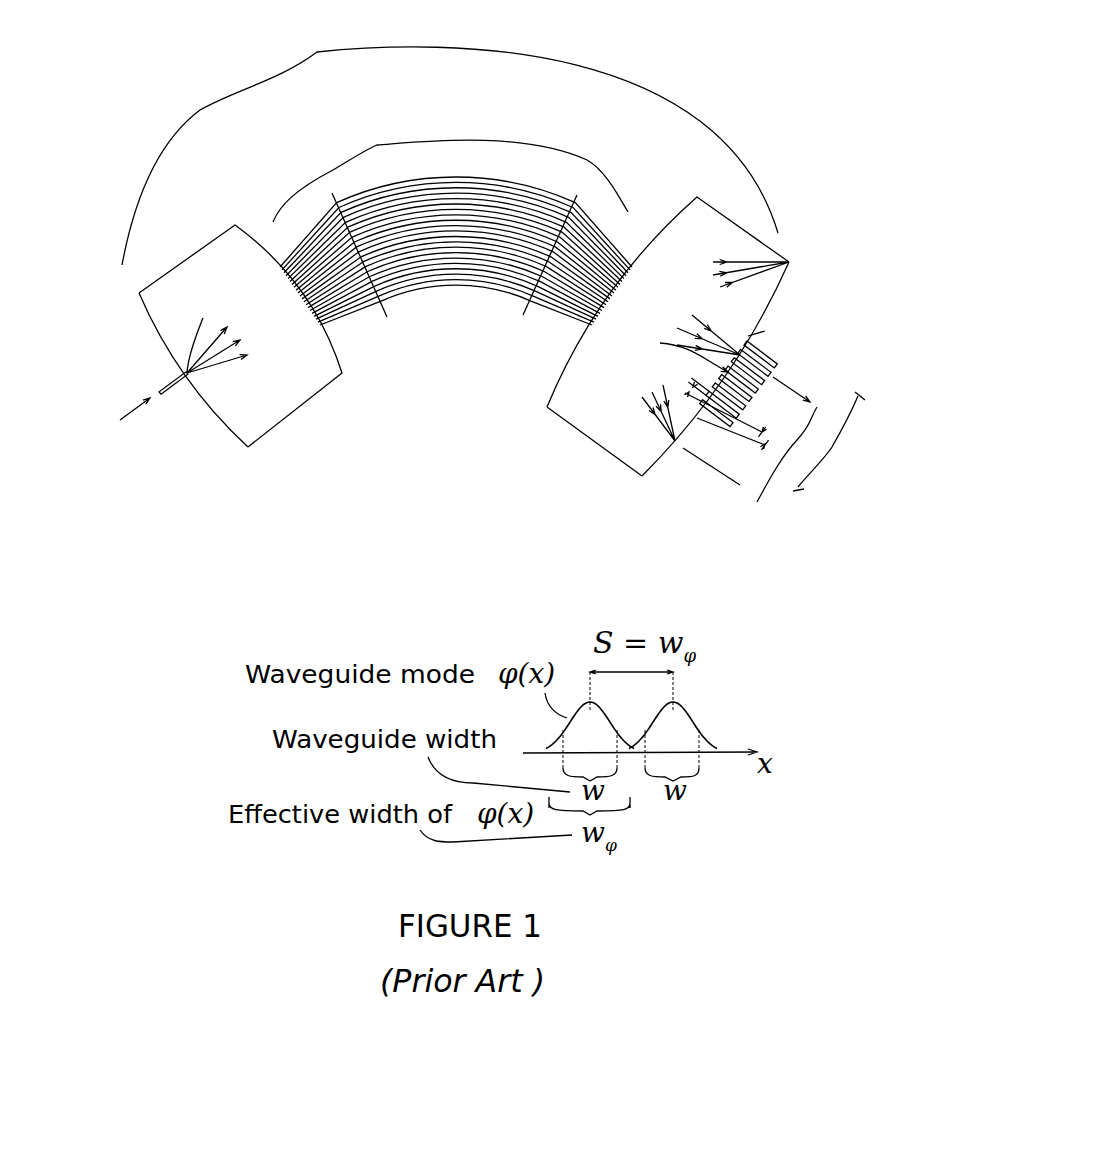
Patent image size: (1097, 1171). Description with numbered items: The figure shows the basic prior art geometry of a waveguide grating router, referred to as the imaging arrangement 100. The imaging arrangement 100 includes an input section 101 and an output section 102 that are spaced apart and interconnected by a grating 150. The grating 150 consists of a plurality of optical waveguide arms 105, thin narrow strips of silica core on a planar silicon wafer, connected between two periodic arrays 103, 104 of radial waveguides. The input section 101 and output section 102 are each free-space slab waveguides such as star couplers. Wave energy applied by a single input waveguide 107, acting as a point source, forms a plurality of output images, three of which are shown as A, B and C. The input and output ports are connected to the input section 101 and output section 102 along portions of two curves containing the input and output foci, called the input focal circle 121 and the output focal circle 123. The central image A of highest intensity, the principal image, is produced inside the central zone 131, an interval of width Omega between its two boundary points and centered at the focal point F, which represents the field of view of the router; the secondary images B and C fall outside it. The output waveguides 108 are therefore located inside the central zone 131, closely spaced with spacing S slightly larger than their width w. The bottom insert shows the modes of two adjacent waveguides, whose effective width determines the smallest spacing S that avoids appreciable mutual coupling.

The imaging arrangement 100 is at (450, 143).
The grating 150 is at (452, 208).
The input section 101 is at (282, 400).
The output section 102 is at (580, 417).
The periodic array of radial waveguides 103 is at (388, 318).
The periodic array of radial waveguides 104 is at (524, 318).
The optical waveguide arms 105 is at (397, 315).
The input waveguide 107 is at (173, 388).
The output waveguides 108 is at (778, 364).
The input focal circle 121 is at (220, 418).
The output focal circle 123 is at (775, 303).
The central zone 131 is at (815, 447).